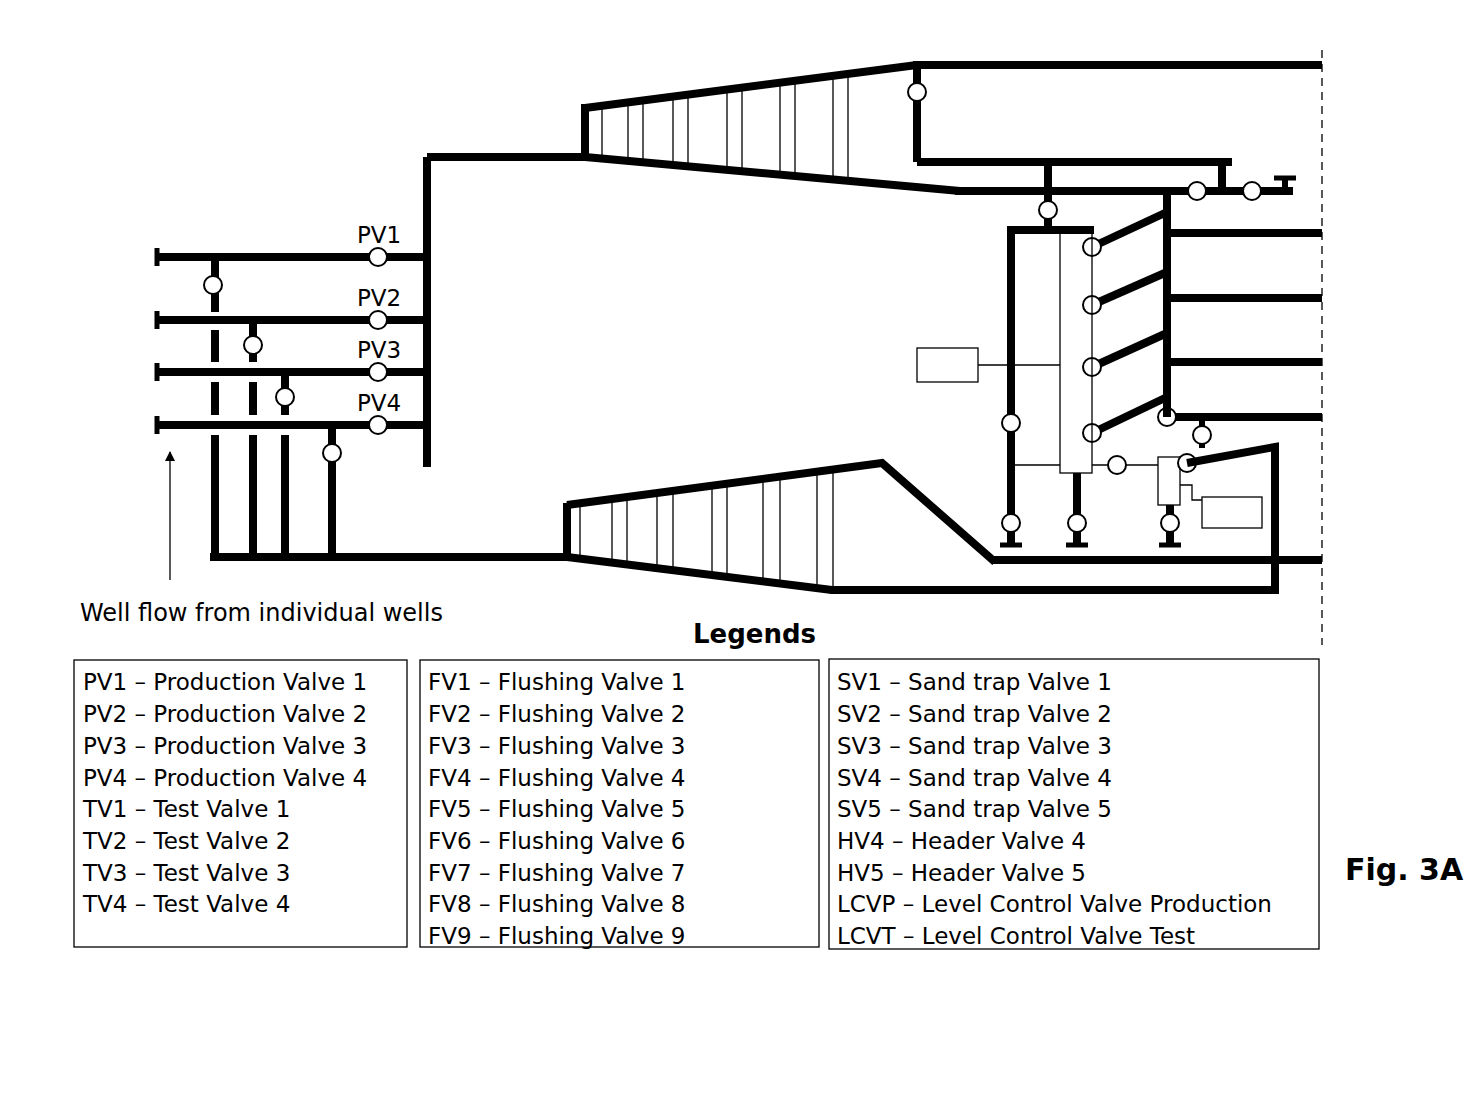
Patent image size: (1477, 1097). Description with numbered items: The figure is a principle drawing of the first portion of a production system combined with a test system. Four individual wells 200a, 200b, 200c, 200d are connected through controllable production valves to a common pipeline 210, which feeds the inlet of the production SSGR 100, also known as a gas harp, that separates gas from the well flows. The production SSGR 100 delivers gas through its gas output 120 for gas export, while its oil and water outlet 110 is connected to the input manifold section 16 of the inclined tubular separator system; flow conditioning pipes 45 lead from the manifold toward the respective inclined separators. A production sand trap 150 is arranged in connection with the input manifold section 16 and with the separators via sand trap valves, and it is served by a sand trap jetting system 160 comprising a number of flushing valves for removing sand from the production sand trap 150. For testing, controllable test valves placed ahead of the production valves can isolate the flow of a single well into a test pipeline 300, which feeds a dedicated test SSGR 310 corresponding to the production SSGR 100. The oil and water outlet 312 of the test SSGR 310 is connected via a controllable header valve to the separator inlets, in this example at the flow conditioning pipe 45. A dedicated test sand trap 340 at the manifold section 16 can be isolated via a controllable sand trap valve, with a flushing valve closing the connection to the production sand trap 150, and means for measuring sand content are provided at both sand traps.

The production SSGR 100 is at (628, 90).
The oil and water outlet 110 is at (962, 196).
The gas output 120 is at (1118, 72).
The production sand trap 150 is at (1050, 333).
The sand trap jetting system 160 is at (998, 483).
The input manifold section 16 is at (1172, 318).
The flow conditioning pipes 45 is at (1302, 228).
The well 200a is at (255, 259).
The well 200b is at (255, 322).
The well 200c is at (255, 374).
The well 200d is at (255, 427).
The common pipeline 210 is at (425, 165).
The test pipeline 300 is at (432, 555).
The test SSGR 310 is at (640, 430).
The oil and water outlet 312 is at (1075, 596).
The dedicated test sand trap 340 is at (1186, 509).